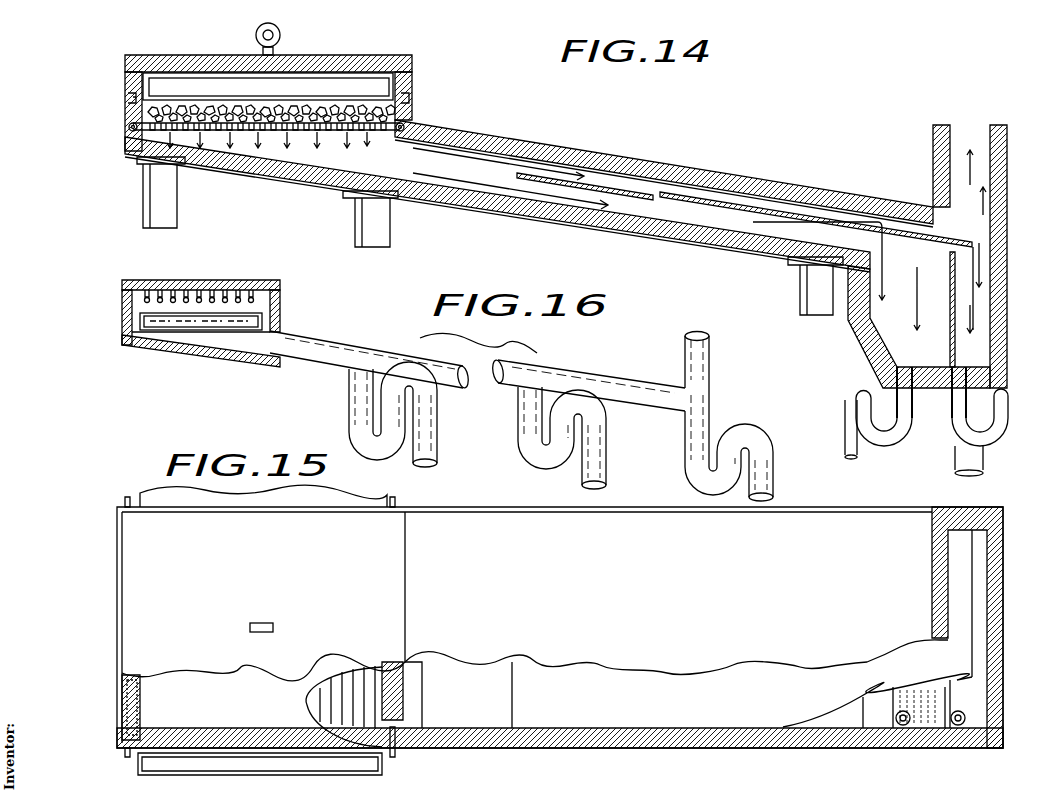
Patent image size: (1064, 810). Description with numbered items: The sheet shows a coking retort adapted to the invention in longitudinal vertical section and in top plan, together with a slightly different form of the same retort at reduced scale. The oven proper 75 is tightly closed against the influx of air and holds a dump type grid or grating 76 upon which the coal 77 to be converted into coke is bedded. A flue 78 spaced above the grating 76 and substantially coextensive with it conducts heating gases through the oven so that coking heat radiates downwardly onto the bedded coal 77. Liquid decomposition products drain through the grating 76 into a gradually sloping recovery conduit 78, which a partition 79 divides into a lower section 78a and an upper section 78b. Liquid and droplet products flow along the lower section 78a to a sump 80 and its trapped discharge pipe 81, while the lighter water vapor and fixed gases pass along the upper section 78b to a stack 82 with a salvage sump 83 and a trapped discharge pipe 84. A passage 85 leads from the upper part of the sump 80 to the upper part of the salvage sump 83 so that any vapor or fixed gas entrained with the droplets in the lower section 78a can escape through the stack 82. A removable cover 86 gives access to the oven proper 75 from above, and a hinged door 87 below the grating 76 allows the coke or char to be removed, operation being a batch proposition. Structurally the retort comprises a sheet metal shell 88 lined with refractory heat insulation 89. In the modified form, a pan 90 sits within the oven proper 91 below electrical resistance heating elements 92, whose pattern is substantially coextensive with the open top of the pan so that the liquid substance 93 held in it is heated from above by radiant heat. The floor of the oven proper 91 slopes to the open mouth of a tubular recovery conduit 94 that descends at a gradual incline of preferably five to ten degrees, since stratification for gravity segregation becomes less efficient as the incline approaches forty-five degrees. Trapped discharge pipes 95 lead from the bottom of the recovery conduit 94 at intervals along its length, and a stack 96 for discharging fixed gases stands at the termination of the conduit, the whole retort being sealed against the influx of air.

In FIG. 14, the oven proper 75 is at (116, 133).
In FIG. 15, the oven proper 75 is at (109, 570).
In FIG. 14, the grid or grating 76 is at (373, 132).
In FIG. 15, the grid or grating 76 is at (385, 697).
In FIG. 14, the coal 77 is at (387, 112).
In FIG. 14, the flue / recovery conduit 78 is at (377, 90).
In FIG. 15, the flue / recovery conduit 78 is at (312, 505).
In FIG. 14, the lower section 78a is at (725, 220).
In FIG. 14, the upper section 78b is at (737, 200).
In FIG. 14, the partition 79 is at (827, 217).
In FIG. 15, the partition 79 is at (566, 712).
In FIG. 14, the sump 80 is at (887, 323).
In FIG. 14, the trapped discharge pipe 81 is at (907, 428).
In FIG. 15, the trapped discharge pipe 81 is at (903, 726).
In FIG. 14, the stack 82 is at (983, 165).
In FIG. 15, the stack 82 is at (962, 588).
In FIG. 14, the salvage sump 83 is at (977, 347).
In FIG. 14, the trapped discharge pipe 84 is at (960, 412).
In FIG. 15, the trapped discharge pipe 84 is at (958, 726).
In FIG. 14, the passage 85 is at (937, 309).
In FIG. 14, the removable cover 86 is at (330, 55).
In FIG. 14, the hinged door 87 is at (257, 165).
In FIG. 14, the sheet metal shell 88 is at (500, 137).
In FIG. 14, the heat insulation 89 is at (553, 150).
In FIG. 16, the pan 90 is at (263, 323).
In FIG. 16, the oven proper 91 is at (111, 315).
In FIG. 16, the electrical resistance heating elements 92 is at (245, 297).
In FIG. 16, the liquid substance 93 is at (167, 328).
In FIG. 16, the tubular recovery conduit 94 is at (340, 333).
In FIG. 16, the trapped discharge pipes 95 is at (357, 405).
In FIG. 16, the stack 96 is at (712, 378).